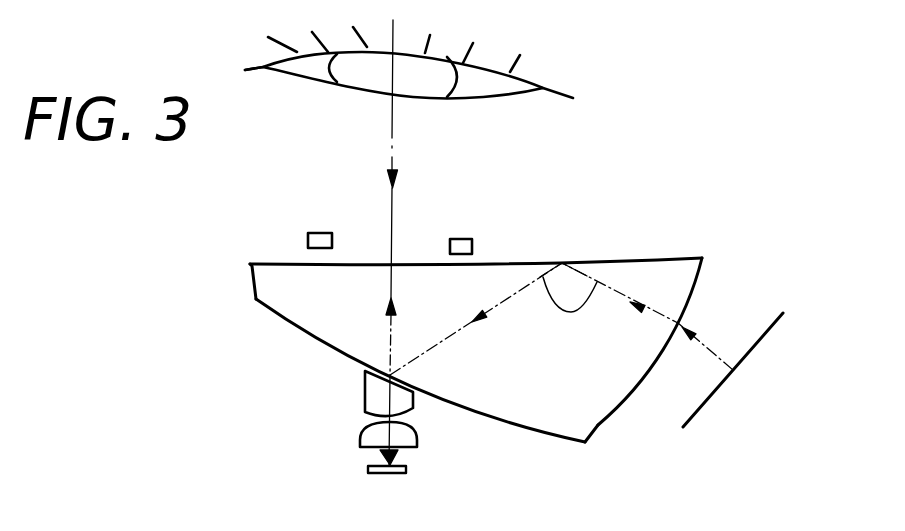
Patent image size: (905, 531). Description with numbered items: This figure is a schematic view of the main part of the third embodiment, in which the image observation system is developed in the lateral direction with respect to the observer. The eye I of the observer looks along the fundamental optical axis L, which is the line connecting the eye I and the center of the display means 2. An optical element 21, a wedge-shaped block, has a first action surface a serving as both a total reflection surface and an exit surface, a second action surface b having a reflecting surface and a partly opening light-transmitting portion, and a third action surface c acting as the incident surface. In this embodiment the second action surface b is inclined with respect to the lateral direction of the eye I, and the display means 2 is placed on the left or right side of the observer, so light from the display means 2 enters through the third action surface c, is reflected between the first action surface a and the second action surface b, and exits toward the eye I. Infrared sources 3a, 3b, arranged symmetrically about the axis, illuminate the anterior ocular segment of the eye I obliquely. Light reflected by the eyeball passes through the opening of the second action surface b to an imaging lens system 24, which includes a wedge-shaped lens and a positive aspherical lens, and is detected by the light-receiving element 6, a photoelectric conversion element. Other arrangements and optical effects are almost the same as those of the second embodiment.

The eye of observer I is at (510, 88).
The fundamental optical axis L is at (393, 201).
The infrared source 3a is at (307, 240).
The infrared source 3b is at (472, 247).
The first action surface a is at (603, 262).
The second action surface b is at (500, 423).
The third action surface c is at (638, 388).
The optical element 21 is at (476, 352).
The display means 2 is at (773, 330).
The imaging lens system 24 is at (358, 368).
The light-receiving element 6 is at (372, 474).